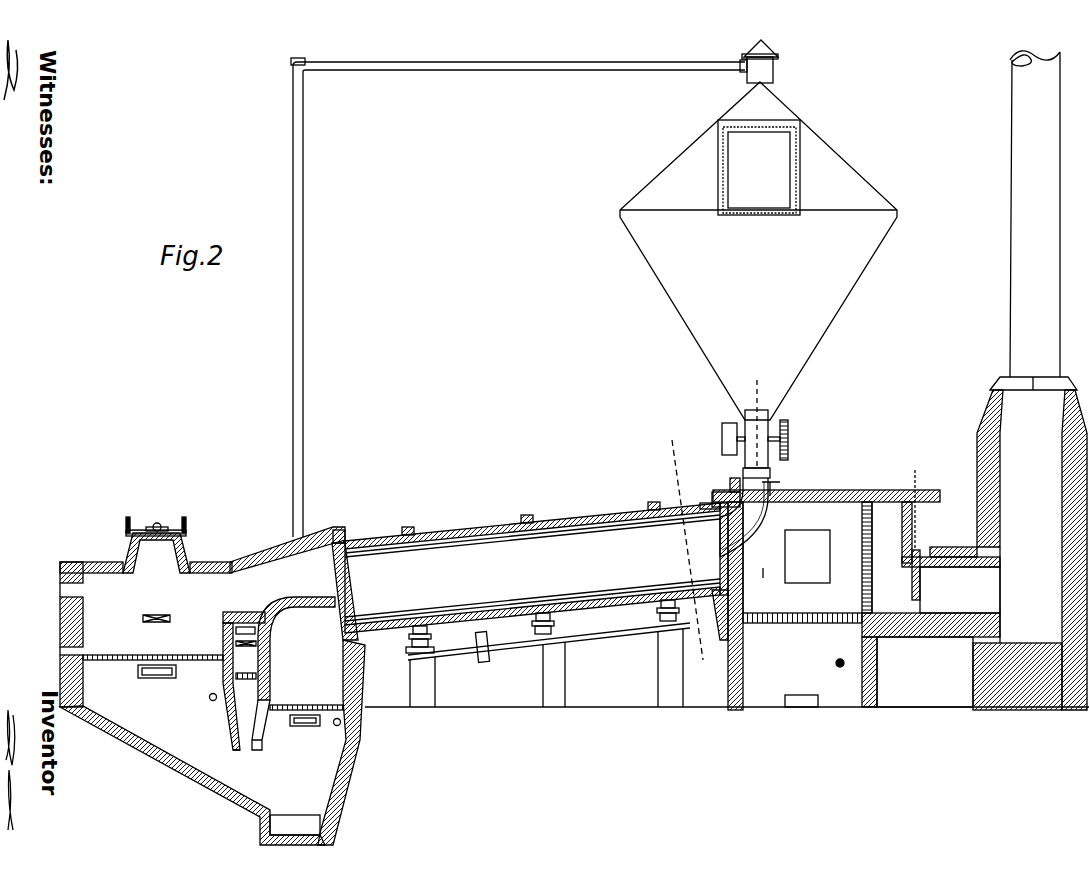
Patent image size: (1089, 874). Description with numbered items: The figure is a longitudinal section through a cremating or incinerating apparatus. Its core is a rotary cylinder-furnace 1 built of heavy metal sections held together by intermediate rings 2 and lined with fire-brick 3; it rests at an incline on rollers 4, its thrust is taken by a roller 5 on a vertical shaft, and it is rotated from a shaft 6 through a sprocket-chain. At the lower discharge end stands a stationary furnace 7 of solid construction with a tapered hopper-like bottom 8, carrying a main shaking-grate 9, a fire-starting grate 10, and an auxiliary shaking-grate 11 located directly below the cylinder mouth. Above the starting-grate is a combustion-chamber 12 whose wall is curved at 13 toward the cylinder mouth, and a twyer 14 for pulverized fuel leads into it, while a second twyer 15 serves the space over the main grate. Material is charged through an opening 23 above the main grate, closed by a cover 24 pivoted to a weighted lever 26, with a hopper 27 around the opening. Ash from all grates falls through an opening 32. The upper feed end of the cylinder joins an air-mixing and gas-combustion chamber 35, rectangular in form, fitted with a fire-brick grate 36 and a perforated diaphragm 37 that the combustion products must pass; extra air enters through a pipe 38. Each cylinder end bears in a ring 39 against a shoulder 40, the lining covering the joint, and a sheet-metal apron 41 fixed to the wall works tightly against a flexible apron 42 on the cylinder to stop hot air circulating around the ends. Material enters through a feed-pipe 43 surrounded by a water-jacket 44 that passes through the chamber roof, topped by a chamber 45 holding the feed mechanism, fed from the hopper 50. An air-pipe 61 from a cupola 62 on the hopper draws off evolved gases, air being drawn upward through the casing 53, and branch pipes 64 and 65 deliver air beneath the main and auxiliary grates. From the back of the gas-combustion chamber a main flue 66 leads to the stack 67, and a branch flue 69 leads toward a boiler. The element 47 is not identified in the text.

The rotary cylinder-furnace 1 is at (526, 564).
The intermediate rings 2 is at (531, 512).
The fire-brick lining 3 is at (578, 598).
The rollers 4 is at (432, 636).
The thrust roller 5 is at (412, 636).
The shaft 6 is at (522, 644).
The stationary furnace 7 is at (212, 686).
The hopper-like bottom 8 is at (192, 775).
The main shaking-grate 9 is at (153, 658).
The fire-starting grate 10 is at (239, 686).
The auxiliary shaking-grate 11 is at (306, 707).
The combustion-chamber 12 is at (244, 627).
The curved wall 13 is at (280, 604).
The twyer 14 is at (272, 645).
The twyer 15 is at (158, 618).
The opening 23 is at (156, 553).
The cover 24 is at (170, 530).
The weighted lever 26 is at (158, 523).
The hopper 27 is at (187, 524).
The ash opening 32 is at (294, 824).
The air-mixing and gas-combustion chamber 35 is at (826, 600).
The fire-brick grate 36 is at (802, 609).
The perforated diaphragm 37 is at (862, 554).
The air pipe 38 is at (836, 661).
The ring 39 is at (722, 492).
The shoulder 40 is at (712, 503).
The sheet-metal apron 41 is at (714, 496).
The flexible apron 42 is at (712, 598).
The feed-pipe 43 is at (744, 517).
The water-jacket 44 is at (763, 568).
The feed-mechanism chamber 45 is at (765, 410).
The feed regulating box 47 is at (722, 440).
The hopper 50 is at (742, 283).
The casing 53 is at (800, 190).
The air-pipe 61 is at (519, 288).
The cupola 62 is at (774, 70).
The branch pipe 64 is at (213, 700).
The branch pipe 65 is at (336, 726).
The main flue 66 is at (951, 580).
The stack 67 is at (1030, 380).
The branch flue 69 is at (912, 580).